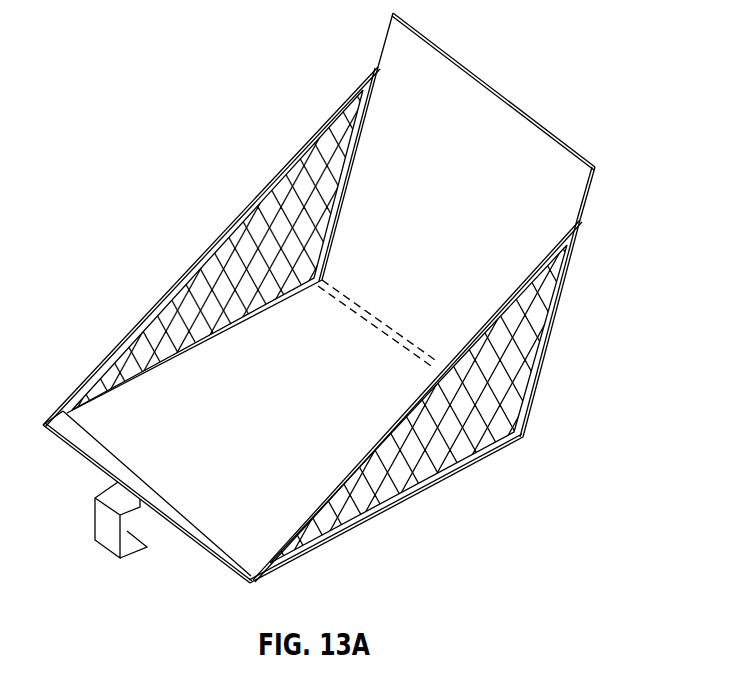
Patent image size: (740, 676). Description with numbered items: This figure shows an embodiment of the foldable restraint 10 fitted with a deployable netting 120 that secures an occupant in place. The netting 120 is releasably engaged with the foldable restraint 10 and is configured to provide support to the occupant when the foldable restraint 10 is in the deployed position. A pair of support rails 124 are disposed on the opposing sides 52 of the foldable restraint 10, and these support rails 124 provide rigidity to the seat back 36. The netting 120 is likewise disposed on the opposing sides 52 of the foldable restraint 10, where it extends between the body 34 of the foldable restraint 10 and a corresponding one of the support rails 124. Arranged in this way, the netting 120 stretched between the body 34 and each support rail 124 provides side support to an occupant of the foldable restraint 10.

The foldable restraint 10 is at (580, 273).
The body 34 is at (463, 243).
The seat back 36 is at (500, 118).
The opposing sides 52 is at (385, 37).
The netting 120 is at (532, 348).
The support rails 124 is at (223, 232).